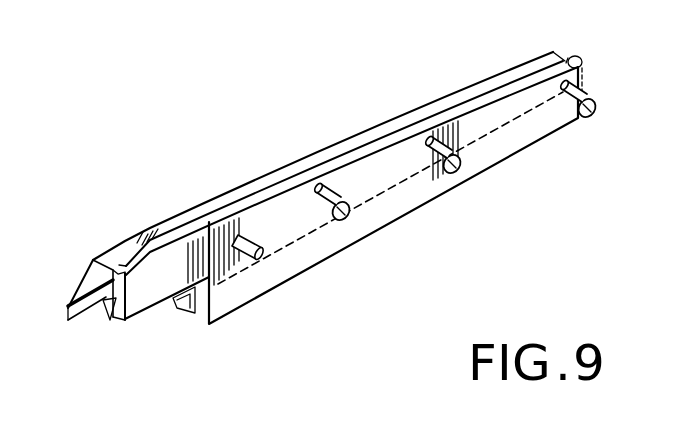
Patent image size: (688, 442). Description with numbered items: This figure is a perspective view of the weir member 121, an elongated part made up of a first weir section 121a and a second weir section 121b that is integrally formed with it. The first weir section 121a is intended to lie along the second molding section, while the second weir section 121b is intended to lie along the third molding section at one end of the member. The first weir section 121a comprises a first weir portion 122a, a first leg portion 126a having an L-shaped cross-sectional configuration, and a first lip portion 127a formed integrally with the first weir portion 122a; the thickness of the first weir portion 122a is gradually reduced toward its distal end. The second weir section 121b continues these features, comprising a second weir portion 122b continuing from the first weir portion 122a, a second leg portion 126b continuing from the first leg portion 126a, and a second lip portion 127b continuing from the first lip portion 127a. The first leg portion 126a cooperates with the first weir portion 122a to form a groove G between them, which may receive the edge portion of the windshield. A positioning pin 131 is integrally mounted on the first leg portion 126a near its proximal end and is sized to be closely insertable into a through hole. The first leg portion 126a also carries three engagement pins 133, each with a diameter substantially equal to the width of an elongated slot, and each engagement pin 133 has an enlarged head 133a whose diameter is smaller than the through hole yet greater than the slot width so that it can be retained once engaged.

The weir member 121 is at (307, 190).
The first weir section 121a is at (393, 118).
The second weir section 121b is at (152, 223).
The first weir portion 122a is at (343, 148).
The second weir portion 122b is at (94, 307).
The first leg portion 126a is at (407, 203).
The second leg portion 126b is at (110, 321).
The first lip portion 127a is at (133, 255).
The second lip portion 127b is at (468, 108).
The positioning pin 131 is at (248, 266).
The engagement pins 133 is at (481, 195).
The enlarged head 133a is at (592, 110).
The groove G is at (174, 304).